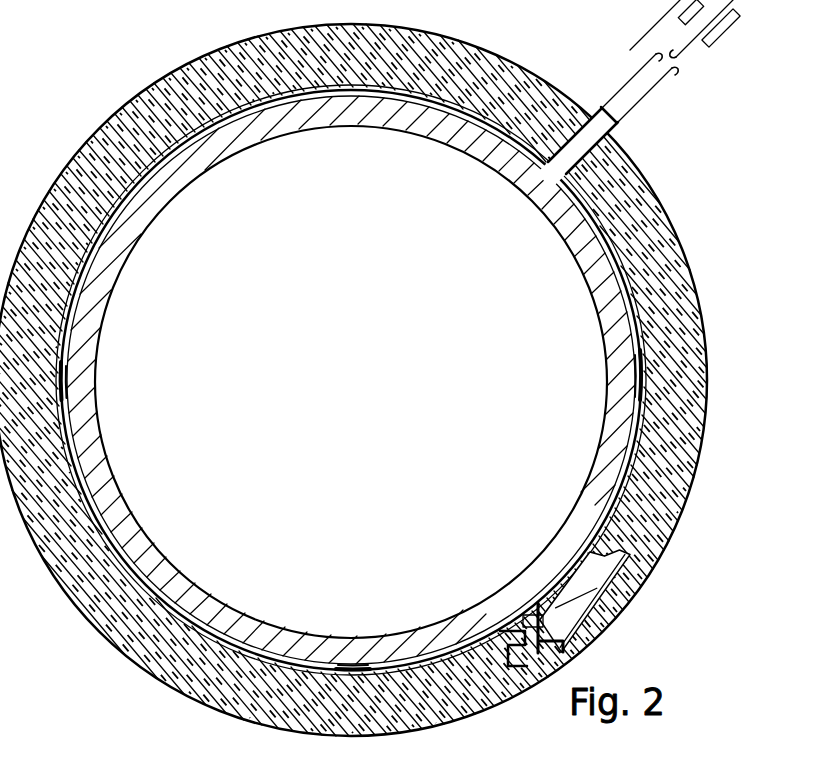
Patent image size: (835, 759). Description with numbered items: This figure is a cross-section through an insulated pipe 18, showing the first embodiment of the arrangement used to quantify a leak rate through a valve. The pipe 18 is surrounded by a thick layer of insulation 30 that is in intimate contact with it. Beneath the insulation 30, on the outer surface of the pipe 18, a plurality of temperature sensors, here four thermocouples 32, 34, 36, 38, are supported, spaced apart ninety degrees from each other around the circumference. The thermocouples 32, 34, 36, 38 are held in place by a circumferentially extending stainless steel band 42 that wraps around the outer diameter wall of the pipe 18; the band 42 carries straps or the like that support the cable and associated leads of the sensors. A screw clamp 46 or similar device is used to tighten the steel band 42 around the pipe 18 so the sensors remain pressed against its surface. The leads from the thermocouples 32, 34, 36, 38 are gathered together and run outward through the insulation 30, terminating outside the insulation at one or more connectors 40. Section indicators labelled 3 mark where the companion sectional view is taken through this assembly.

The section line for FIG. 3 is at (318, 73).
The pipe 18 is at (114, 491).
The insulation 30 is at (662, 521).
The temperature sensor 32 is at (345, 92).
The temperature sensor 34 is at (640, 371).
The temperature sensor 36 is at (352, 668).
The temperature sensor 38 is at (62, 383).
The connector 40 is at (672, 3).
The stainless steel band 42 is at (206, 634).
The screw clamp 46 is at (607, 598).